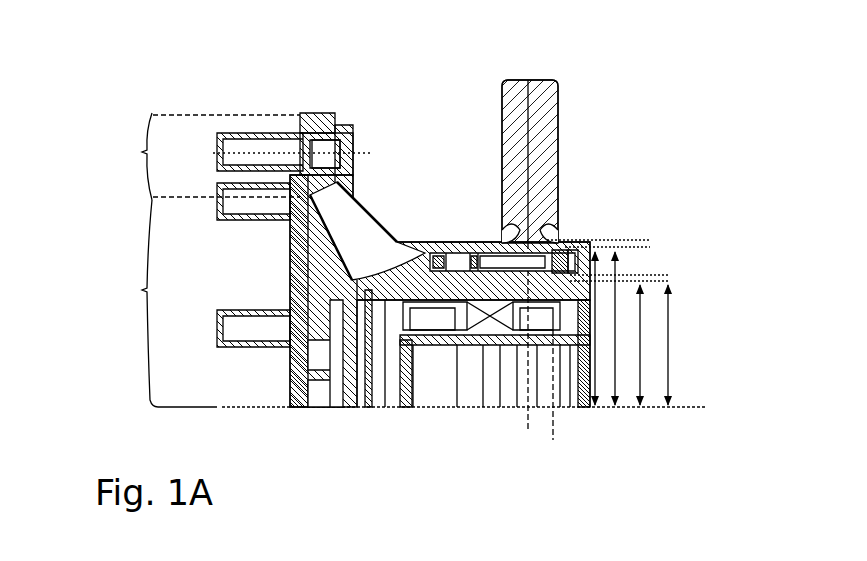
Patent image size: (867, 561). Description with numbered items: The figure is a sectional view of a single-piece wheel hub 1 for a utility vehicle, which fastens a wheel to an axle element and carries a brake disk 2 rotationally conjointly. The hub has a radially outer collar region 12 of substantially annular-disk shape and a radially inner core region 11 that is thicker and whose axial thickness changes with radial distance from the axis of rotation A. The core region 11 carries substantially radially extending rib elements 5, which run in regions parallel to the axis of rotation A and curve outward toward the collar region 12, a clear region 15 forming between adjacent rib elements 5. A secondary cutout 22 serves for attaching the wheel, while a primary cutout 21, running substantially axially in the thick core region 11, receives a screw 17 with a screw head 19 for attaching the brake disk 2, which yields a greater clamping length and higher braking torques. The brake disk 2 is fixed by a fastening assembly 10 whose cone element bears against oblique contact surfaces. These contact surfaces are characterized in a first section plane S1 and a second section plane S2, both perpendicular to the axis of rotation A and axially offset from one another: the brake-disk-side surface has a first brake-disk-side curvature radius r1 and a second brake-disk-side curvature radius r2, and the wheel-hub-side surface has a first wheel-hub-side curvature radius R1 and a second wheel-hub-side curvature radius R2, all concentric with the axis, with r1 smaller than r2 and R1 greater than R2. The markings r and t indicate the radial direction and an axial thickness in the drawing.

The wheel hub 1 is at (398, 238).
The brake disk 2 is at (498, 104).
The rib element 5 is at (320, 273).
The fastening assembly 10 is at (580, 256).
The core region 11 is at (345, 291).
The collar region 12 is at (229, 156).
The clear region 15 is at (334, 408).
The screw 17 is at (570, 253).
The screw head 19 is at (442, 238).
The primary cutout 21 is at (488, 250).
The secondary cutout 22 is at (324, 145).
The axis of rotation A is at (217, 407).
The first brake-disk-side curvature radius r1 is at (594, 328).
The second brake-disk-side curvature radius r2 is at (616, 328).
The first wheel-hub-side curvature radius R1 is at (667, 345).
The second wheel-hub-side curvature radius R2 is at (640, 345).
The first section plane S1 is at (480, 451).
The second section plane S2 is at (594, 443).
The radial direction r is at (523, 425).
The thickness t is at (553, 420).